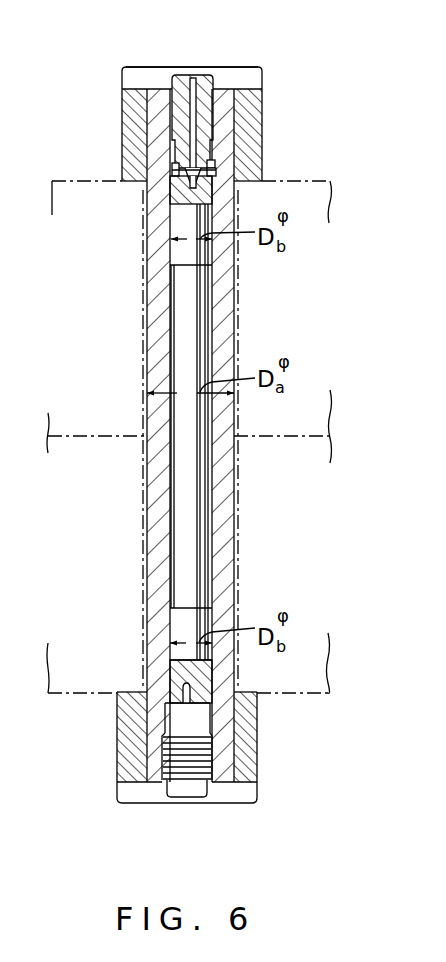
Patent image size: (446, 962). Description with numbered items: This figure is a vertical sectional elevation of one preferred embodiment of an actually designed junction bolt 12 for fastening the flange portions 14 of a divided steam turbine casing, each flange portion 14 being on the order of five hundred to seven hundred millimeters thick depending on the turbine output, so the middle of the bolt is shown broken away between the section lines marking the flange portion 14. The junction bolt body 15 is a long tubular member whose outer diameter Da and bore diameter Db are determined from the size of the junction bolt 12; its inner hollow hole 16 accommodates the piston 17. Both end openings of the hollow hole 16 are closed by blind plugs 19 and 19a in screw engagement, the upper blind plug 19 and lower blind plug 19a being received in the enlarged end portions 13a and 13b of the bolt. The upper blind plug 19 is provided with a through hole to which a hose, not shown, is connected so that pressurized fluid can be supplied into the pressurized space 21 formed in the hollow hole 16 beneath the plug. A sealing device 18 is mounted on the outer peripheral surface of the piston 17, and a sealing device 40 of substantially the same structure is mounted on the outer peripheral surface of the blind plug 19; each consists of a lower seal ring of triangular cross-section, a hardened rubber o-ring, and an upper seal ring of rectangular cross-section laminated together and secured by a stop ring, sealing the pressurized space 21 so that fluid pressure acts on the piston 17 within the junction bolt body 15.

The junction bolt 12 is at (190, 63).
The upper cap 13a is at (257, 103).
The lower cap 13b is at (257, 742).
The flange portion 14 is at (332, 192).
The junction bolt body 15 is at (157, 326).
The inner hollow hole 16 is at (210, 522).
The piston 17 is at (178, 508).
The sealing device 18 is at (212, 172).
The blind plug 19 is at (204, 102).
The blind plug 19a is at (186, 796).
The pressurized space 21 is at (214, 160).
The sealing device 40 is at (176, 165).